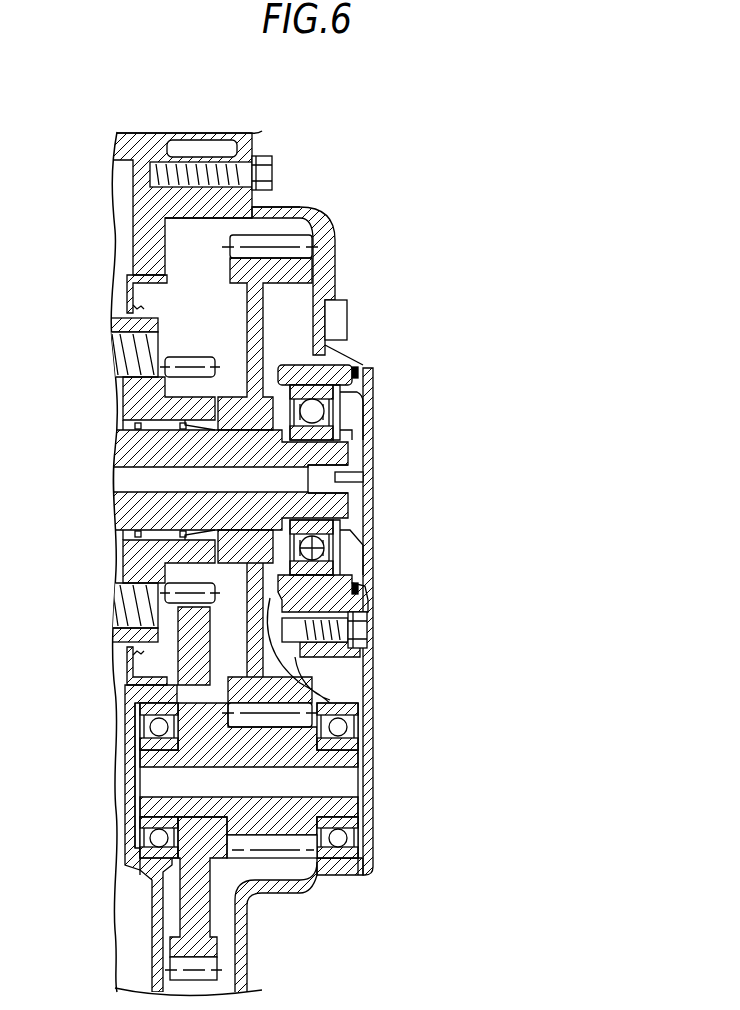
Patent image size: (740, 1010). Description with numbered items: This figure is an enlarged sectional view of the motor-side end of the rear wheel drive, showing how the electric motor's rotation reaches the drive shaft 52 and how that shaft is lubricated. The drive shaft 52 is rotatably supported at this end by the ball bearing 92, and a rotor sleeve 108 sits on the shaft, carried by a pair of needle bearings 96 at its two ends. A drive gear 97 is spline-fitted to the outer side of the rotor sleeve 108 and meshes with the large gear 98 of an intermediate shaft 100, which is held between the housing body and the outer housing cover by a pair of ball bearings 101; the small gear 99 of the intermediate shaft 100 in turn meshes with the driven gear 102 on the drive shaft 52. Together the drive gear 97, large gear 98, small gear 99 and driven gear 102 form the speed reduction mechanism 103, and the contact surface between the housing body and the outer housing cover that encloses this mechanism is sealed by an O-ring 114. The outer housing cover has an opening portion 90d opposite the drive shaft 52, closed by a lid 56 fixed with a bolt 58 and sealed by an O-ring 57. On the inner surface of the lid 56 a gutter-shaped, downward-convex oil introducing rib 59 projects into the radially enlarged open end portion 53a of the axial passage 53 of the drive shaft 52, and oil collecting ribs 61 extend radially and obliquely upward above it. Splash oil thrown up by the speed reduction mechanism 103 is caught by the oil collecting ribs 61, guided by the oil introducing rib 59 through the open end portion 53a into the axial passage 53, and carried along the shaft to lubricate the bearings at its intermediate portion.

The drive shaft 52 is at (224, 511).
The axial passage 53 is at (224, 448).
The radially enlarged open end portion 53a is at (337, 486).
The lid 56 is at (368, 425).
The O-ring 57 is at (360, 374).
The bolt 58 is at (358, 632).
The oil introducing rib 59 is at (348, 477).
The oil collecting ribs 61 is at (355, 545).
The opening portion 90d is at (330, 567).
The ball bearing 92 is at (320, 390).
The needle bearings 96 is at (171, 393).
The drive gear 97 is at (171, 566).
The large gear 98 is at (200, 905).
The small gear 99 is at (288, 855).
The intermediate shaft 100 is at (295, 800).
The ball bearings 101 is at (157, 730).
The driven gear 102 is at (302, 240).
The speed reduction mechanism 103 is at (285, 230).
The rotor sleeve 108 is at (129, 612).
The O-ring 114 is at (183, 200).